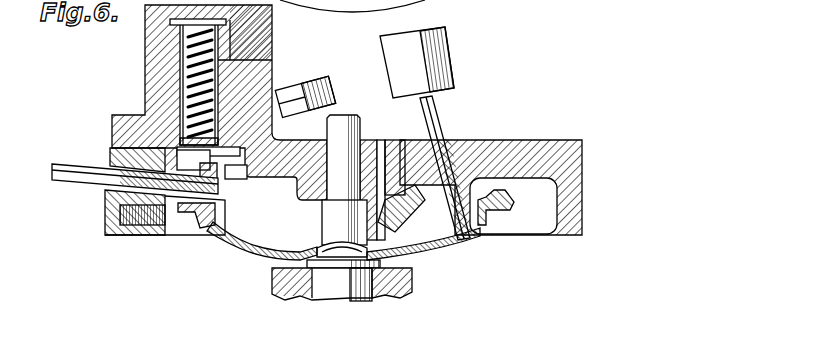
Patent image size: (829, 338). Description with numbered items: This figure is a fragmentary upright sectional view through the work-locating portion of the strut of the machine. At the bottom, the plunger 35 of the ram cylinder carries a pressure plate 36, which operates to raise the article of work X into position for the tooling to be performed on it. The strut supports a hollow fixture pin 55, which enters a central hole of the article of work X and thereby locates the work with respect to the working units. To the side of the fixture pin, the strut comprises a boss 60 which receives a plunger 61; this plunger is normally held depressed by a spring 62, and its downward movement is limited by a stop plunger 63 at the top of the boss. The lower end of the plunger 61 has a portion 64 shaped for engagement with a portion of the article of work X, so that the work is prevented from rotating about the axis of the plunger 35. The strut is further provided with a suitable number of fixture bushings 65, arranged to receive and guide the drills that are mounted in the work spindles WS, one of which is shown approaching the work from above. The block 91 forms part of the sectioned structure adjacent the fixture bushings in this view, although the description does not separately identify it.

The boss 60 is at (146, 69).
The stop plunger 63 is at (172, 34).
The spring 62 is at (190, 88).
The plunger 61 is at (235, 88).
The work spindles WS is at (396, 66).
The block 91 is at (592, 128).
The portion 64 is at (227, 172).
The hollow fixture pin 55 is at (333, 213).
The article of work X is at (252, 243).
The pressure plate 36 is at (395, 288).
The plunger 35 is at (352, 297).
The fixture bushings 65 is at (106, 193).